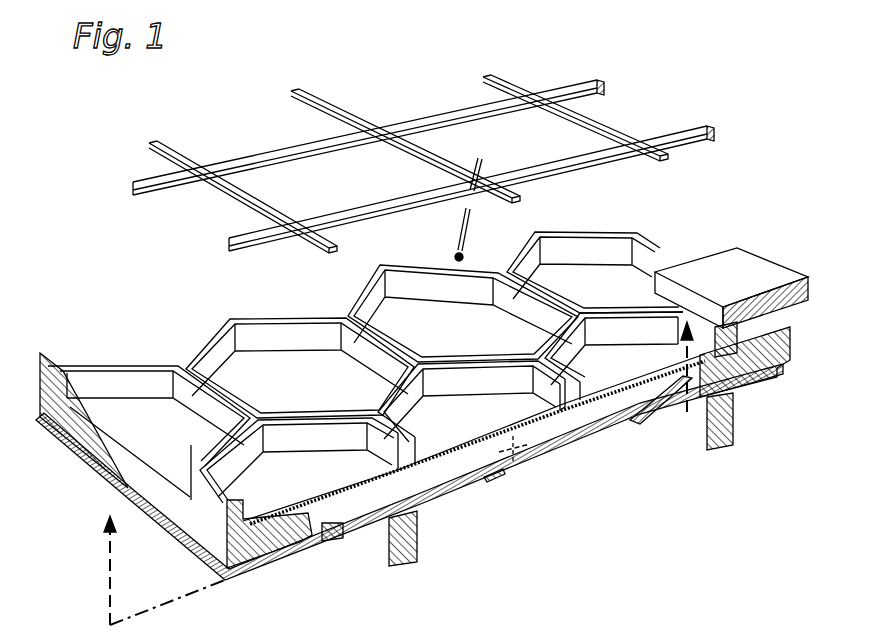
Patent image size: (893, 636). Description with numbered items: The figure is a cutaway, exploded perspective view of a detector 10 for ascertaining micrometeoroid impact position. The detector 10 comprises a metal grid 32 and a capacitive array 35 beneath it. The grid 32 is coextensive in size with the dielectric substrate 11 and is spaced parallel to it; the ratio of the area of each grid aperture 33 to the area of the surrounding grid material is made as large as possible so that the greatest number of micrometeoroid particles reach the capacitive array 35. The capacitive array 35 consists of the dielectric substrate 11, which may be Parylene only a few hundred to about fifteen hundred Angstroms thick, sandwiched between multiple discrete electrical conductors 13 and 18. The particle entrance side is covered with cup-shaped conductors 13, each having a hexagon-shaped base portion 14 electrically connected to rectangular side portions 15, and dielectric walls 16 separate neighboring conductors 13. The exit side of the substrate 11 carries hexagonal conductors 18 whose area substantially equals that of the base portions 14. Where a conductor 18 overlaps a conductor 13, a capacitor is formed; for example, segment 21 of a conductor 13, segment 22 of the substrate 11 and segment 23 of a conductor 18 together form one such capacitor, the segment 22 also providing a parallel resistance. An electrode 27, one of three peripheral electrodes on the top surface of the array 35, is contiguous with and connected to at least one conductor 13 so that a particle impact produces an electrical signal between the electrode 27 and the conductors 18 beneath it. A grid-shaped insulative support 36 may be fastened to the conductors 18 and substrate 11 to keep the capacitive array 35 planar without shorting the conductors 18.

The detector 10 is at (713, 72).
The dielectric substrate 11 is at (263, 553).
The cup-shaped conductors 13 is at (252, 388).
The hexagon-shaped base portion 14 is at (460, 336).
The rectangular side portions 15 is at (318, 337).
The dielectric walls 16 is at (398, 460).
The electrical conductors 18 is at (298, 557).
The segment of conductor 21 is at (537, 420).
The segment of dielectric substrate 22 is at (543, 447).
The segment of conductor 23 is at (520, 477).
The electrode 27 is at (715, 258).
The grid 32 is at (613, 122).
The grid aperture 33 is at (300, 172).
The capacitive array 35 is at (102, 327).
The grid-shaped support 36 is at (383, 552).